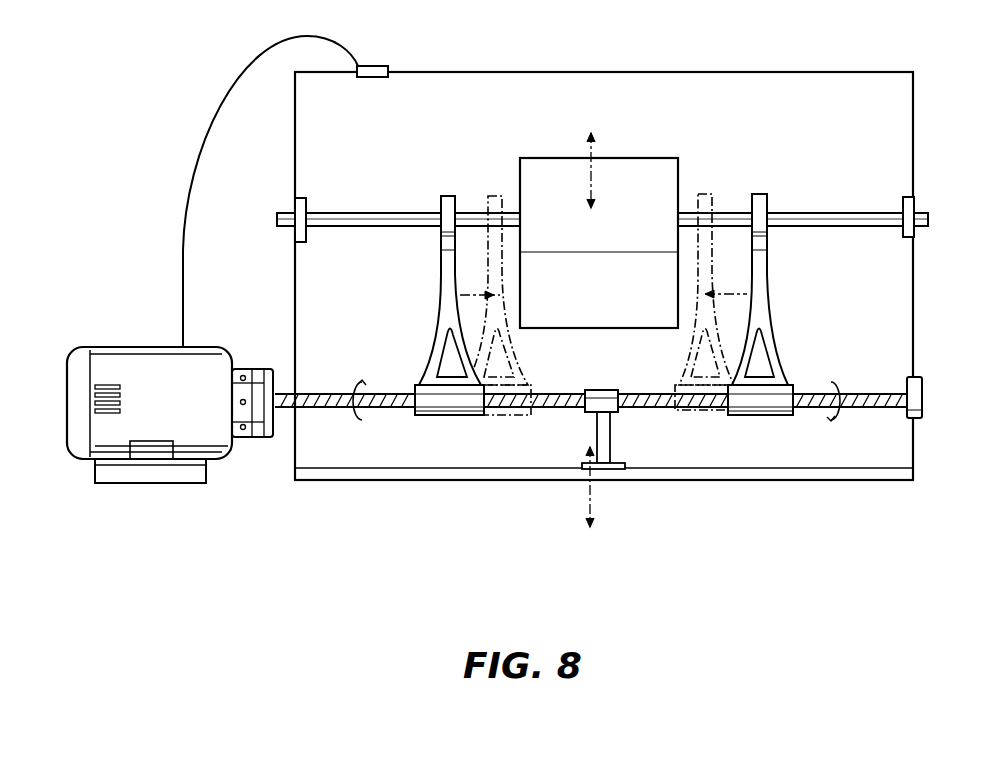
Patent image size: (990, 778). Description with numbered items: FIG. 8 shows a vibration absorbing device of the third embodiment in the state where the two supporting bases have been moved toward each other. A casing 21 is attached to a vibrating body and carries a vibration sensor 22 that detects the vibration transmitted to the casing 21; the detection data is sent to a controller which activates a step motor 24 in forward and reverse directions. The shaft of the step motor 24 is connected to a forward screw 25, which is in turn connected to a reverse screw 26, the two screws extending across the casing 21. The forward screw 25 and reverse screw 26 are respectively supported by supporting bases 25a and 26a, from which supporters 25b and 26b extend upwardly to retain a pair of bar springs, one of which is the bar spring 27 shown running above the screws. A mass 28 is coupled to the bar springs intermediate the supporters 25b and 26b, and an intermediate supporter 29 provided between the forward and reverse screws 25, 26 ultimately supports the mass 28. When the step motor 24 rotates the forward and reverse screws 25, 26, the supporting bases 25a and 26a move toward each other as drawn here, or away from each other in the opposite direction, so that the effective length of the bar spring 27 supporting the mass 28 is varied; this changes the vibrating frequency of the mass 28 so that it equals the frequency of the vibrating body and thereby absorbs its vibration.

The casing 21 is at (463, 484).
The vibration sensor 22 is at (373, 74).
The step motor 24 is at (120, 357).
The forward screw 25 is at (525, 410).
The supporting base 25a is at (447, 413).
The supporter 25b is at (440, 305).
The reverse screw 26 is at (657, 404).
The supporting base 26a is at (777, 400).
The supporter 26b is at (770, 308).
The bar spring 27 is at (920, 226).
The mass 28 is at (653, 170).
The intermediate supporter 29 is at (615, 360).